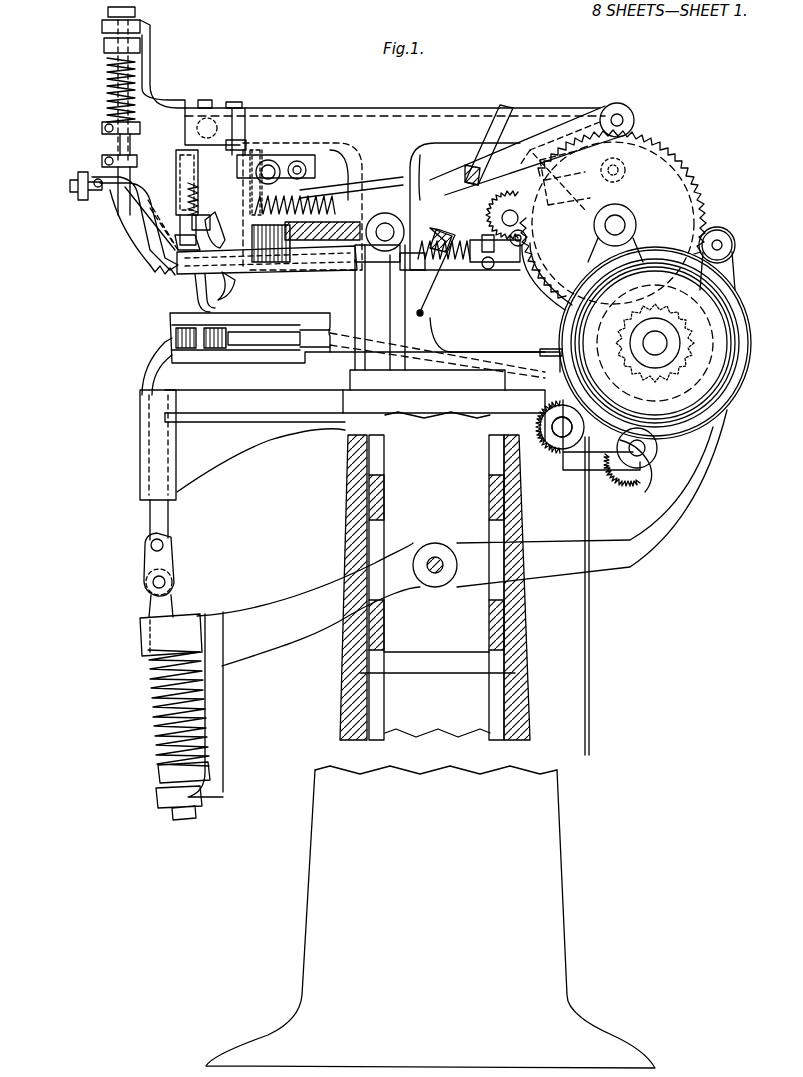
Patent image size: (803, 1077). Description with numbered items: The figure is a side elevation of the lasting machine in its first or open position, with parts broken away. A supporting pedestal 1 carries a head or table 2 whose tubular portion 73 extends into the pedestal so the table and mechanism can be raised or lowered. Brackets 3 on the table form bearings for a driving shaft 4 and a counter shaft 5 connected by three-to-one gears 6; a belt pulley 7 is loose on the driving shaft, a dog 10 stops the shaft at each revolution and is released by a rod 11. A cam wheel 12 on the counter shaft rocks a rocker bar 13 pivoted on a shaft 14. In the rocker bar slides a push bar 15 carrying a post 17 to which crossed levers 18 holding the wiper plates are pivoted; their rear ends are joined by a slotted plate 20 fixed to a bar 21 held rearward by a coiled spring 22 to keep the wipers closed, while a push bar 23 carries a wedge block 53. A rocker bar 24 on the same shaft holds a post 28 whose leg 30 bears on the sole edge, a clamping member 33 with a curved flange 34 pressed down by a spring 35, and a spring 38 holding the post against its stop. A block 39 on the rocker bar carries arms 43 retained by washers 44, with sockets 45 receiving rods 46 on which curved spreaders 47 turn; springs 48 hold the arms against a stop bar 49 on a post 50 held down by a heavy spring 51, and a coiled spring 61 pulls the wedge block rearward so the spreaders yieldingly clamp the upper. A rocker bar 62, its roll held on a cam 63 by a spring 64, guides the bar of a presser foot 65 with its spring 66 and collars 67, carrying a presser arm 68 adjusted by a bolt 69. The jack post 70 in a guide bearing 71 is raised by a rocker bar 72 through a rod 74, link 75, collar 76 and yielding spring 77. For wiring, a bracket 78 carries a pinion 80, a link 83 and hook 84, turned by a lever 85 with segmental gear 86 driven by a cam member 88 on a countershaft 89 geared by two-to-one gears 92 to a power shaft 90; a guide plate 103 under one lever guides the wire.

The supporting pedestal 1 is at (540, 820).
The head or table 2 is at (448, 400).
The brackets 3 is at (446, 350).
The driving shaft 4 is at (665, 335).
The counter shaft 5 is at (626, 225).
The three-to-one gears 6 is at (700, 203).
The belt pulley 7 is at (735, 392).
The dog 10 is at (550, 348).
The rod 11 is at (590, 600).
The cam wheel 12 is at (540, 290).
The rocker bar 13 is at (348, 182).
The shaft 14 is at (387, 215).
The slide push bar 15 is at (500, 125).
The post 17 is at (290, 243).
The crossed levers 18 is at (312, 275).
The plate 20 is at (350, 272).
The bar 21 is at (485, 268).
The coiled spring 22 is at (450, 262).
The push bar 23 is at (500, 207).
The rocker bar 24 is at (388, 112).
The post 28 is at (205, 100).
The leg 30 is at (178, 270).
The clamping member 33 is at (190, 200).
The curved flange or leg 34 is at (223, 231).
The coiled spring 35 is at (186, 184).
The spring 38 is at (180, 169).
The block 39 is at (305, 188).
The arms 43 is at (245, 152).
The washers 44 is at (298, 160).
The sockets 45 is at (178, 156).
The rods 46 is at (180, 200).
The clamping feet or spreaders 47 is at (180, 238).
The springs 48 is at (270, 160).
The stop bar 49 is at (238, 140).
The post 50 is at (234, 102).
The heavy spring 51 is at (246, 112).
The wedge block 53 is at (276, 158).
The coiled spring 61 is at (365, 208).
The rocker bar 62 is at (345, 135).
The cam 63 is at (518, 262).
The coiled spring 64 is at (440, 280).
The presser foot 65 is at (92, 225).
The coiled spring 66 is at (104, 82).
The collars 67 is at (101, 128).
The presser arm 68 is at (150, 205).
The screw-threaded bolt 69 is at (68, 187).
The post 70 is at (150, 361).
The guide bearing 71 is at (142, 445).
The rocker bar 72 is at (280, 603).
The tubular portion 73 is at (360, 521).
The rod 74 is at (170, 592).
The link 75 is at (172, 556).
The collar 76 is at (140, 646).
The coiled spring 77 is at (152, 715).
The supporting bracket 78 is at (285, 355).
The pinion 80 is at (190, 349).
The link 83 is at (284, 322).
The hook or bill 84 is at (194, 302).
The lever 85 is at (262, 348).
The segmental gear 86 is at (218, 349).
The cam member 88 is at (628, 490).
The countershaft 89 is at (616, 484).
The power shaft 90 is at (562, 437).
The two-to-one gears 92 is at (546, 445).
The guide plate 103 is at (237, 297).